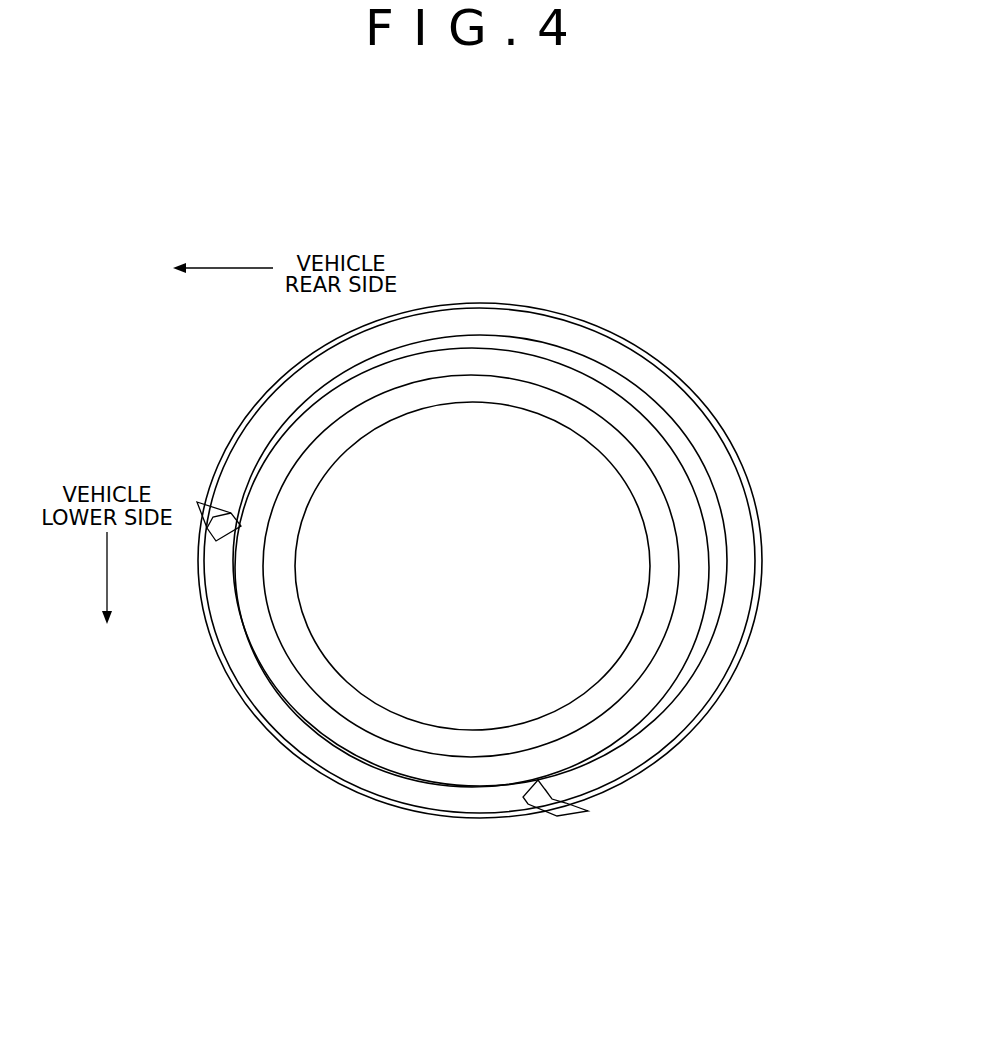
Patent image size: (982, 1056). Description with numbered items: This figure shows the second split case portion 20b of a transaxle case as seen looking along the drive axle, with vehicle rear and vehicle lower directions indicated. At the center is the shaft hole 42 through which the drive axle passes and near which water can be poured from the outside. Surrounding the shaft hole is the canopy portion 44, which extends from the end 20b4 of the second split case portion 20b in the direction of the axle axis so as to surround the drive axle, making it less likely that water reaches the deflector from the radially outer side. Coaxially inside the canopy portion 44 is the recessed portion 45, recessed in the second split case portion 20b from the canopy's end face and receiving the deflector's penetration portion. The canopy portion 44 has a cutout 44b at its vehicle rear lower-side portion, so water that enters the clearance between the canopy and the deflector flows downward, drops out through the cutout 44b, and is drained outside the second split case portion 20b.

The second split case portion 20b is at (525, 554).
The canopy portion 44 is at (479, 589).
The cutout 44b is at (270, 707).
The recessed portion 45 is at (673, 480).
The shaft hole 42 is at (633, 570).
The end 20b4 is at (643, 637).